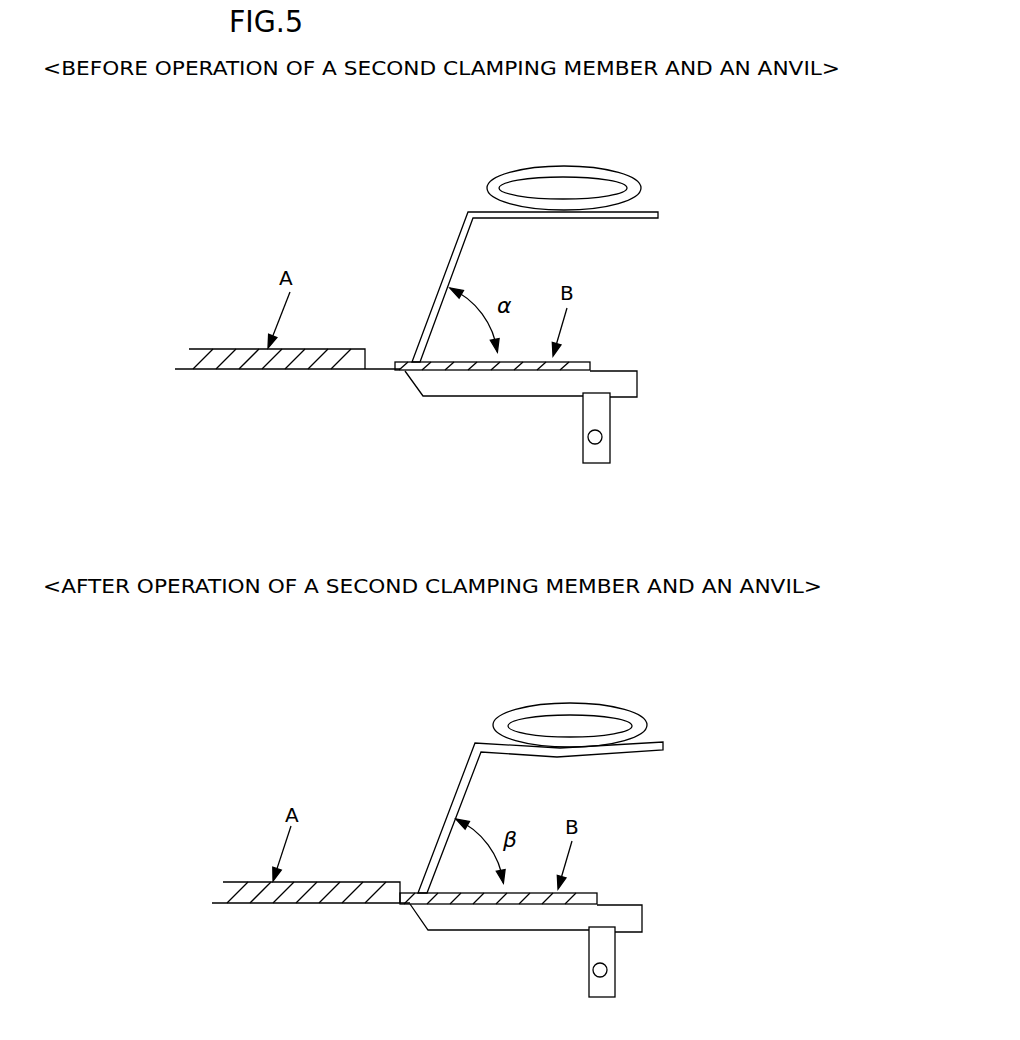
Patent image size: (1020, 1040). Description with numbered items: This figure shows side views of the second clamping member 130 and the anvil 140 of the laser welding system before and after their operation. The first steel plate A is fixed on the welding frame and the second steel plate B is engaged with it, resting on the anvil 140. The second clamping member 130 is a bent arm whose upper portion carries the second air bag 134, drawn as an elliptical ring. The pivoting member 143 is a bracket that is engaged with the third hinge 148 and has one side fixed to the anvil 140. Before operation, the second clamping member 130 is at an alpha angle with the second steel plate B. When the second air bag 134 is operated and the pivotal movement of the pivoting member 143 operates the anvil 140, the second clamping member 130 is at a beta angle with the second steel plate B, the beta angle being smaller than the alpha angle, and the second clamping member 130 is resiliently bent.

The second clamping member 130 is at (452, 272).
The second air bag 134 is at (561, 170).
The anvil 140 is at (630, 385).
The pivoting member 143 is at (606, 410).
The third hinge 148 is at (600, 437).